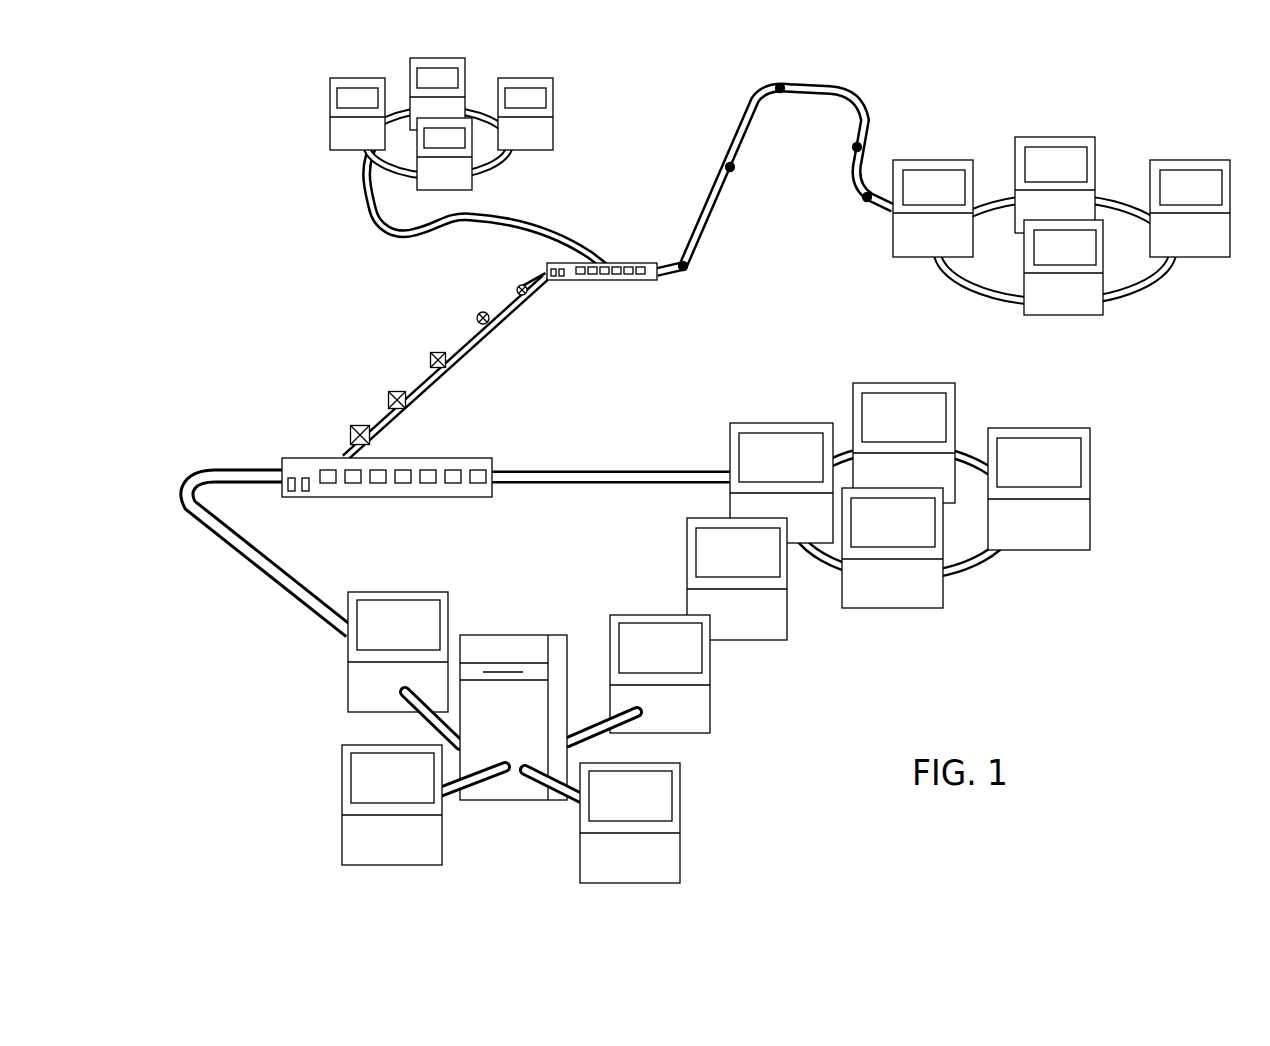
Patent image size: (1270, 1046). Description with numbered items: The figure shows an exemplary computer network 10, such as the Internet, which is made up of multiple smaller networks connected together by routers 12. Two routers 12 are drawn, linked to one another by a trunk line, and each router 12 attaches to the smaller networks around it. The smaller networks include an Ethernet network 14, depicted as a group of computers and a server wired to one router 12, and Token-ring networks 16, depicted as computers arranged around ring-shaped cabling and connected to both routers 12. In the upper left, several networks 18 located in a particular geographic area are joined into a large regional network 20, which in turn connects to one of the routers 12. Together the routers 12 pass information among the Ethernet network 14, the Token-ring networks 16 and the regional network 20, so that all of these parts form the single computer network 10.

The computer network 10 is at (708, 472).
The router 12 is at (635, 262).
The Ethernet network 14 is at (720, 803).
The Token-ring network 16 is at (1114, 125).
The network 18 is at (354, 77).
The regional network 20 is at (340, 183).